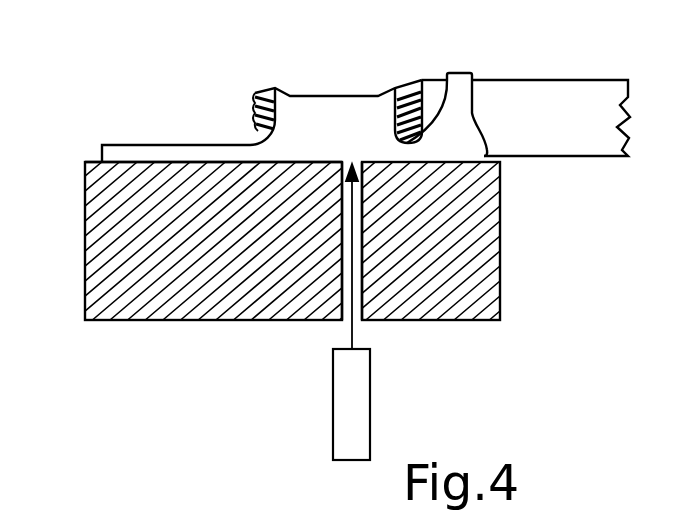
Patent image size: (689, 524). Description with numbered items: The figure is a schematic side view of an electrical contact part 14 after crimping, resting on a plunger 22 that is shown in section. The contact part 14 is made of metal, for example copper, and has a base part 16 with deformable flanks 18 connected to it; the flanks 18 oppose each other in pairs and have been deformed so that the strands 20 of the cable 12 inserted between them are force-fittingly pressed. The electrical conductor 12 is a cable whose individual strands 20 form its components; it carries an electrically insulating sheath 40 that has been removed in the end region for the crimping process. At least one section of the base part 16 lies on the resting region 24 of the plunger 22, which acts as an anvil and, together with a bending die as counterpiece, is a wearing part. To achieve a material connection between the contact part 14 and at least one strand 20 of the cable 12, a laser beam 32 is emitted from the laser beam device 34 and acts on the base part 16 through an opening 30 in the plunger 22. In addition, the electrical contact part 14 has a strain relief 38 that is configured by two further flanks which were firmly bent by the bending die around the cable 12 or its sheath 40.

The electrical conductor 12 is at (530, 129).
The electrical contact part 14 is at (222, 100).
The base part 16 is at (108, 150).
The deformable flanks 18 is at (338, 102).
The strands 20 is at (253, 113).
The plunger 22 is at (485, 258).
The resting region 24 is at (140, 165).
The opening 30 is at (329, 314).
The laser beam 32 is at (355, 330).
The laser beam device 34 is at (355, 410).
The strain relief 38 is at (462, 70).
The electrically insulating sheath 40 is at (566, 82).